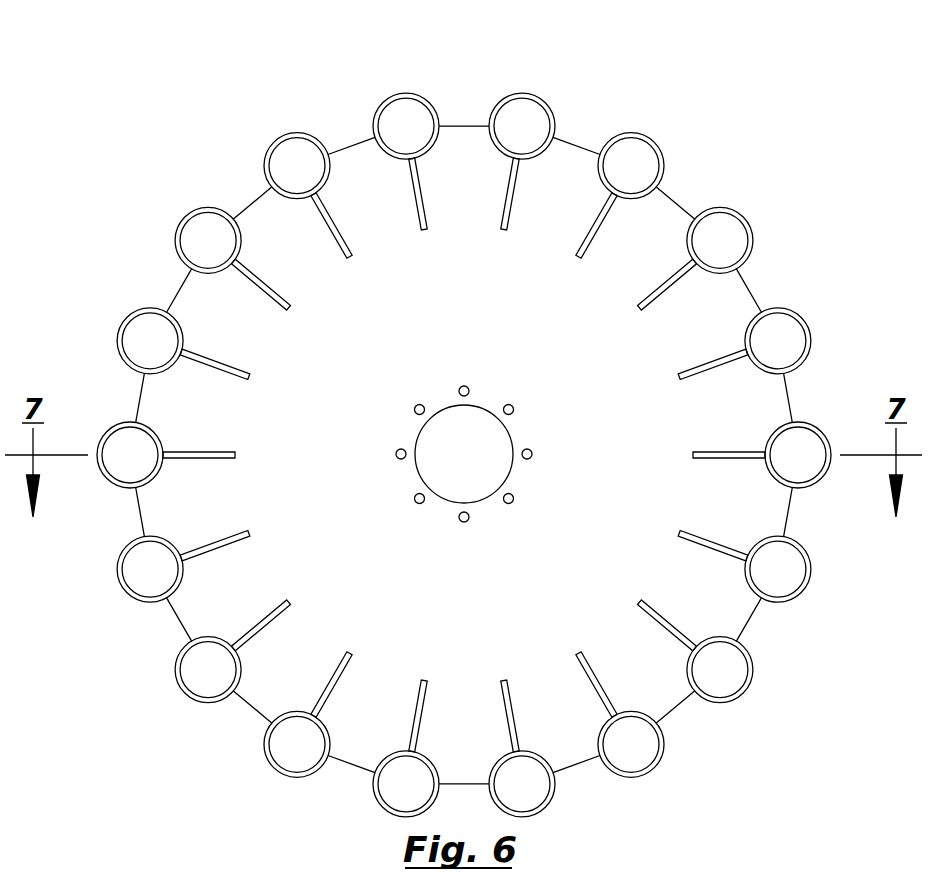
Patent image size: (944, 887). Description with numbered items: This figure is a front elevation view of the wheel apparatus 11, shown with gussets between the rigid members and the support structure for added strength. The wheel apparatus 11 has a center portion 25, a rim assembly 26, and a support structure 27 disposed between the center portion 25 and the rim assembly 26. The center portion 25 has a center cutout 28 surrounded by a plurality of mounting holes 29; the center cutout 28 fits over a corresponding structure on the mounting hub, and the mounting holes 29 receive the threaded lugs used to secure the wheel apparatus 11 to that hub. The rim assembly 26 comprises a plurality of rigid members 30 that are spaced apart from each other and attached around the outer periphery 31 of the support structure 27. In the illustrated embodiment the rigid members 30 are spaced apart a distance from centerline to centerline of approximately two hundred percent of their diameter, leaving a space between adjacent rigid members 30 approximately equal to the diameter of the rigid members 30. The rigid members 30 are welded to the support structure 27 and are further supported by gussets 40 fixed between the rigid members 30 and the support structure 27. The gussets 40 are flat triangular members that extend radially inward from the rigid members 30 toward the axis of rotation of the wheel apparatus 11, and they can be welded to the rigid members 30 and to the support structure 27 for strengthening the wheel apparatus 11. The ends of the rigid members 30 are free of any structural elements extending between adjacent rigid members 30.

The wheel apparatus 11 is at (195, 108).
The center portion 25 is at (490, 397).
The rim assembly 26 is at (657, 142).
The support structure 27 is at (658, 347).
The center cutout 28 is at (445, 407).
The mounting holes 29 is at (416, 496).
The rigid members 30 is at (512, 95).
The outer periphery 31 is at (173, 288).
The gussets 40 is at (507, 190).